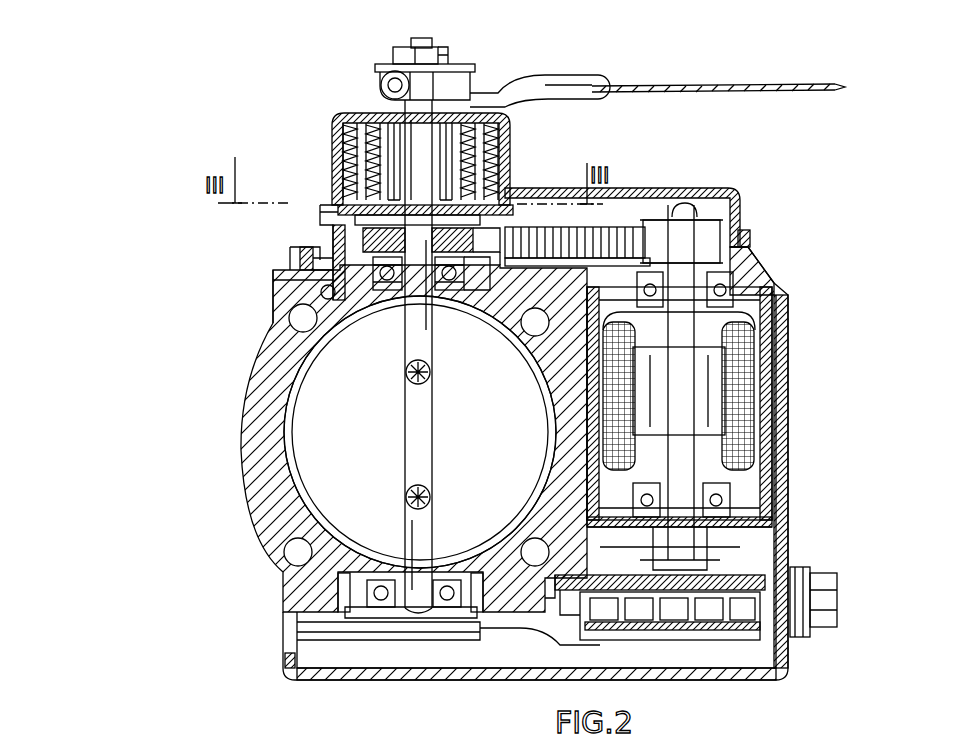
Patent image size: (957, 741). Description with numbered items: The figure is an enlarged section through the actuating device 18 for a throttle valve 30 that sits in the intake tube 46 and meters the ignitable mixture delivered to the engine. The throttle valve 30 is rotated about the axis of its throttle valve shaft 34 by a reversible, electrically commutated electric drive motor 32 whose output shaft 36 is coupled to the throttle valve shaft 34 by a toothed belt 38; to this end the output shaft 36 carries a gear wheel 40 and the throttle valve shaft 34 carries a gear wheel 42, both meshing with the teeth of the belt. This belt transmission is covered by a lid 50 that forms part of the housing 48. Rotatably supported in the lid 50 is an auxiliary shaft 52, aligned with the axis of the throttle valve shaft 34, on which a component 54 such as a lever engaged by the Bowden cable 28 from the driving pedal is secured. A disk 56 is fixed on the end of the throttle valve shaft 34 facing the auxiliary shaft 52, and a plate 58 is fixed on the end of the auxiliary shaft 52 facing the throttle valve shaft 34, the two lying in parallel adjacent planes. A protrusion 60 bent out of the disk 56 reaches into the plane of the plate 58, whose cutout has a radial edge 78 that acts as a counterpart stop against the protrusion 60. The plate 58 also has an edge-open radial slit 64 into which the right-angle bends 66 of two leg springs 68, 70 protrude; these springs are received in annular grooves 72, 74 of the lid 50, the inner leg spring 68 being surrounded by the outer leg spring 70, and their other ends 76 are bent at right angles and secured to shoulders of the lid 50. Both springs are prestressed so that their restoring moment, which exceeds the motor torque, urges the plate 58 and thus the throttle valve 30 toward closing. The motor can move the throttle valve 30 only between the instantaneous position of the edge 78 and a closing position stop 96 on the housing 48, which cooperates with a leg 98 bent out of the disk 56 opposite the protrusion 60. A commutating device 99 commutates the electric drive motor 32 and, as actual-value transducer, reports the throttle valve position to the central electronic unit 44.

The actuating device 18 is at (750, 212).
The Bowden cable 28 is at (722, 86).
The throttle valve 30 is at (420, 432).
The electric drive motor 32 is at (735, 455).
The throttle valve shaft 34 is at (415, 600).
The output shaft 36 is at (678, 318).
The toothed belt 38 is at (622, 228).
The gear wheel 40 is at (668, 228).
The gear wheel 42 is at (515, 228).
The central electronic unit 44 is at (760, 625).
The intake tube 46 is at (298, 458).
The housing 48 is at (275, 505).
The lid 50 is at (715, 190).
The auxiliary shaft 52 is at (420, 38).
The component 54 is at (528, 92).
The disk 56 is at (378, 292).
The plate 58 is at (395, 292).
The protrusion 60 is at (300, 240).
The slit 64 is at (508, 203).
The right-angle bends 66 is at (455, 240).
The leg spring 68 is at (466, 122).
The leg spring 70 is at (505, 138).
The annular groove 72 is at (333, 135).
The annular groove 74 is at (335, 178).
The other ends 76 is at (375, 122).
The radial edge 78 is at (325, 205).
The closing position stop 96 is at (321, 288).
The leg 98 is at (305, 262).
The commutating device 99 is at (700, 565).